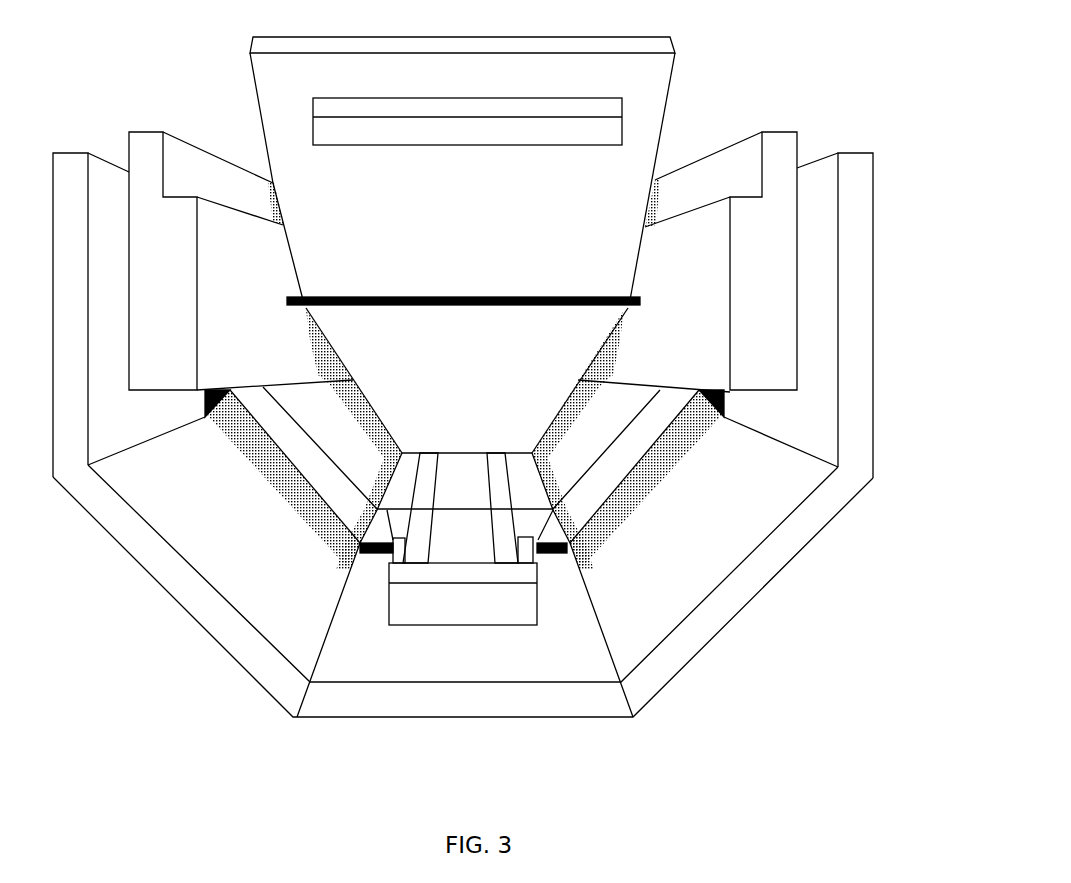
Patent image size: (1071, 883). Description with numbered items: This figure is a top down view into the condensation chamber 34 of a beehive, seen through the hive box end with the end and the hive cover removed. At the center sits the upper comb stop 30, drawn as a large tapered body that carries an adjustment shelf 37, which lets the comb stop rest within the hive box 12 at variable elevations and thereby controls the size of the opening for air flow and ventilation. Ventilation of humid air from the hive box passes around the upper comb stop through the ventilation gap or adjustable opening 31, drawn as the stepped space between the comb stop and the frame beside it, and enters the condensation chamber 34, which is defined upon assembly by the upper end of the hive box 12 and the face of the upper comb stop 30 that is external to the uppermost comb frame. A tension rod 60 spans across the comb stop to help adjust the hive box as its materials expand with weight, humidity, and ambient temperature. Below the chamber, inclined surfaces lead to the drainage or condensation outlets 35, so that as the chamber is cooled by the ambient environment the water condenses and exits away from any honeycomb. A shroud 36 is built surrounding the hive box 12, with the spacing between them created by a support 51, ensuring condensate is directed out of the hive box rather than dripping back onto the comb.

The upper comb stop 30 is at (610, 82).
The adjustment shelf 37 is at (565, 130).
The condensation chamber 34 is at (510, 238).
The ventilation gap 31 is at (258, 155).
The tension rod 60 is at (640, 302).
The hive box 12 is at (730, 390).
The shroud 36 is at (852, 437).
The condensation outlet 35 is at (283, 485).
The support 51 is at (505, 610).